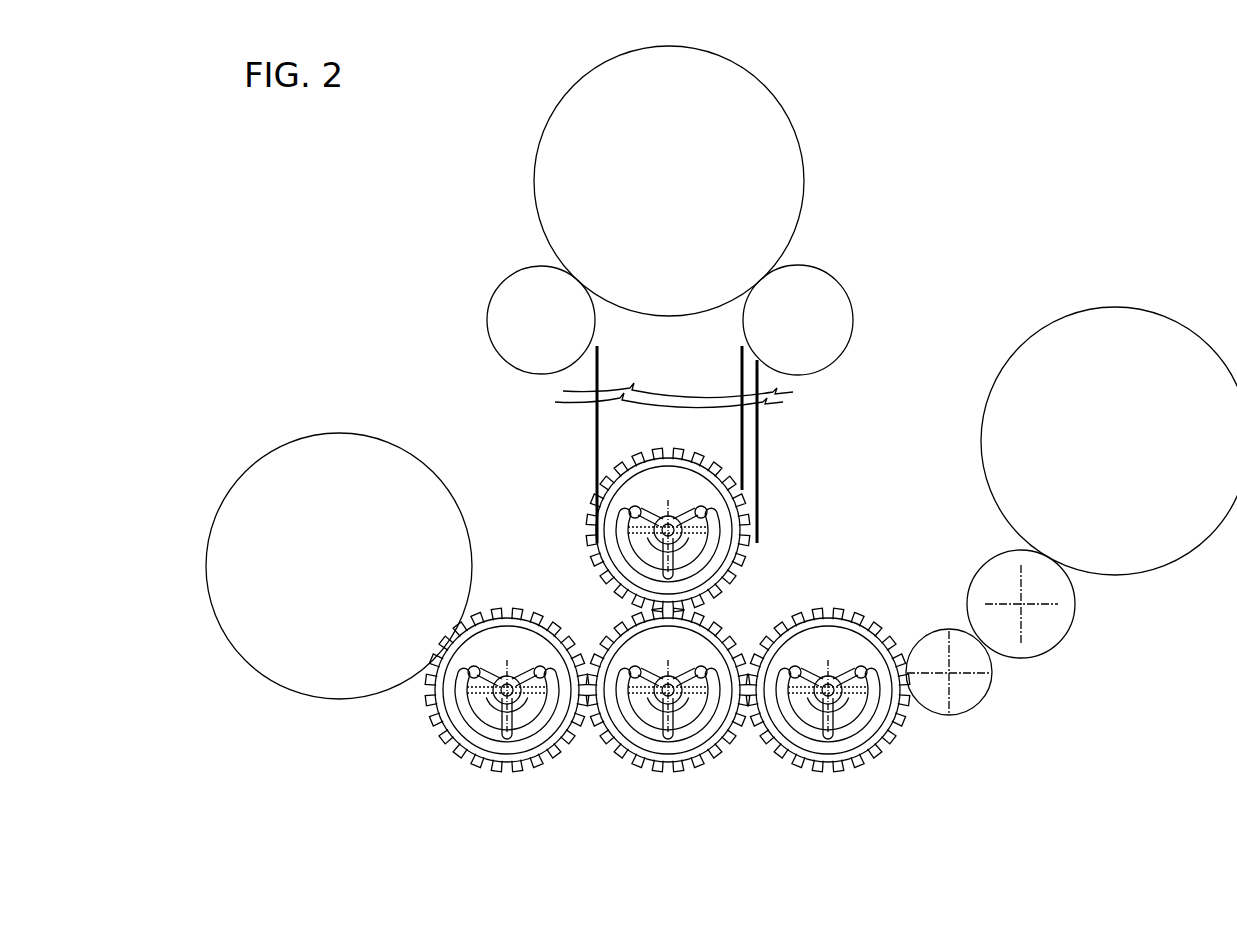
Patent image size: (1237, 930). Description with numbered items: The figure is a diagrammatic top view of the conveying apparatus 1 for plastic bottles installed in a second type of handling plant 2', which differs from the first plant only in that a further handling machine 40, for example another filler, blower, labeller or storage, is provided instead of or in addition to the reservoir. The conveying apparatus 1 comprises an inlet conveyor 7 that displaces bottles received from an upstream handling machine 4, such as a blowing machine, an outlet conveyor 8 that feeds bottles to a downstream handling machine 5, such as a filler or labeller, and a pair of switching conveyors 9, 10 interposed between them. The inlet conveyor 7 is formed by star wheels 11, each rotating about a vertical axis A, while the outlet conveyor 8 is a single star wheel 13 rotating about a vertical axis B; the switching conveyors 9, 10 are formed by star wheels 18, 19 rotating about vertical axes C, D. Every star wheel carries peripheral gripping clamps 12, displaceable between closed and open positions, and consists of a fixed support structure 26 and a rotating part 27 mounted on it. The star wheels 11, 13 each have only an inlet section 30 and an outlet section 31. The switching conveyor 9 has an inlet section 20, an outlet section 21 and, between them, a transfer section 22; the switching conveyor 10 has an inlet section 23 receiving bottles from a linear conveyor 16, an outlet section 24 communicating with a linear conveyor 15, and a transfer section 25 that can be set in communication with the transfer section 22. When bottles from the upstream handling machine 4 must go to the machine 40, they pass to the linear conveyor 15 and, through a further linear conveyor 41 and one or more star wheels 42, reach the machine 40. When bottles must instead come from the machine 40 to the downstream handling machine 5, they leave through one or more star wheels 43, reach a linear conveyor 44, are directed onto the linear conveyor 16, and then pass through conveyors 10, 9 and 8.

The conveying apparatus 1 is at (460, 777).
The handling plant 2' is at (957, 173).
The upstream handling machine 4 is at (1157, 291).
The downstream handling machine 5 is at (270, 678).
The inlet conveyor 7 is at (926, 721).
The outlet conveyor 8 is at (438, 750).
The switching conveyor 9 is at (678, 790).
The switching conveyor 10 is at (762, 540).
The star wheel 11 is at (1076, 650).
The gripping clamp 12 is at (734, 461).
The star wheel 13 is at (507, 641).
The linear conveyor 15 is at (580, 462).
The linear conveyor 16 is at (761, 423).
The star wheel 18 is at (701, 781).
The star wheel 19 is at (597, 479).
The inlet section 20 is at (752, 739).
The outlet section 21 is at (592, 741).
The transfer section 22 is at (673, 622).
The inlet section 23 is at (728, 523).
The outlet section 24 is at (588, 541).
The transfer section 25 is at (673, 593).
The fixed support structure 26 is at (673, 500).
The rotating part 27 is at (611, 463).
The inlet section 30 is at (1049, 569).
The outlet section 31 is at (991, 637).
The handling machine 40 is at (772, 108).
The linear conveyor 41 is at (600, 367).
The star wheel 42 is at (498, 291).
The star wheel 43 is at (838, 303).
The linear conveyor 44 is at (739, 370).
The vertical axis A is at (1020, 604).
The vertical axis B is at (492, 771).
The vertical axis C is at (732, 737).
The vertical axis D is at (628, 462).